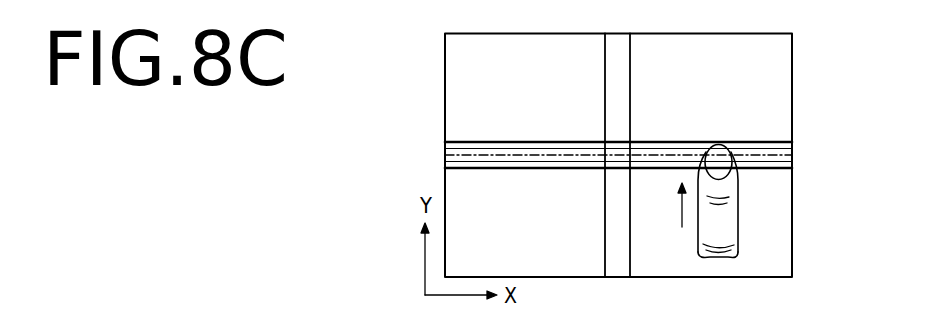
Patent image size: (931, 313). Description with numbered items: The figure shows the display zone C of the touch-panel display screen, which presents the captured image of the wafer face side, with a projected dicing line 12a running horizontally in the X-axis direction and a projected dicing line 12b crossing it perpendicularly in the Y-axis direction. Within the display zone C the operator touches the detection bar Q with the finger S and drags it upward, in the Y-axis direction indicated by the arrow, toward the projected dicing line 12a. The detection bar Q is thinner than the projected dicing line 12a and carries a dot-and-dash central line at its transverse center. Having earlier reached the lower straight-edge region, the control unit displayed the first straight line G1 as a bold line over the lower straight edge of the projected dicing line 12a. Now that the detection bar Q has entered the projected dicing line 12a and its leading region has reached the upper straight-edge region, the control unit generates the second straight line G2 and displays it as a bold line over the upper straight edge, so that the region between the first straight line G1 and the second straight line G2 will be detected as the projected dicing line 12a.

The display zone C is at (445, 72).
The projected dicing line 12a is at (645, 147).
The projected dicing line 12b is at (626, 60).
The second straight line G2 is at (765, 142).
The detection bar Q is at (788, 152).
The first straight line G1 is at (762, 168).
The finger S is at (720, 217).